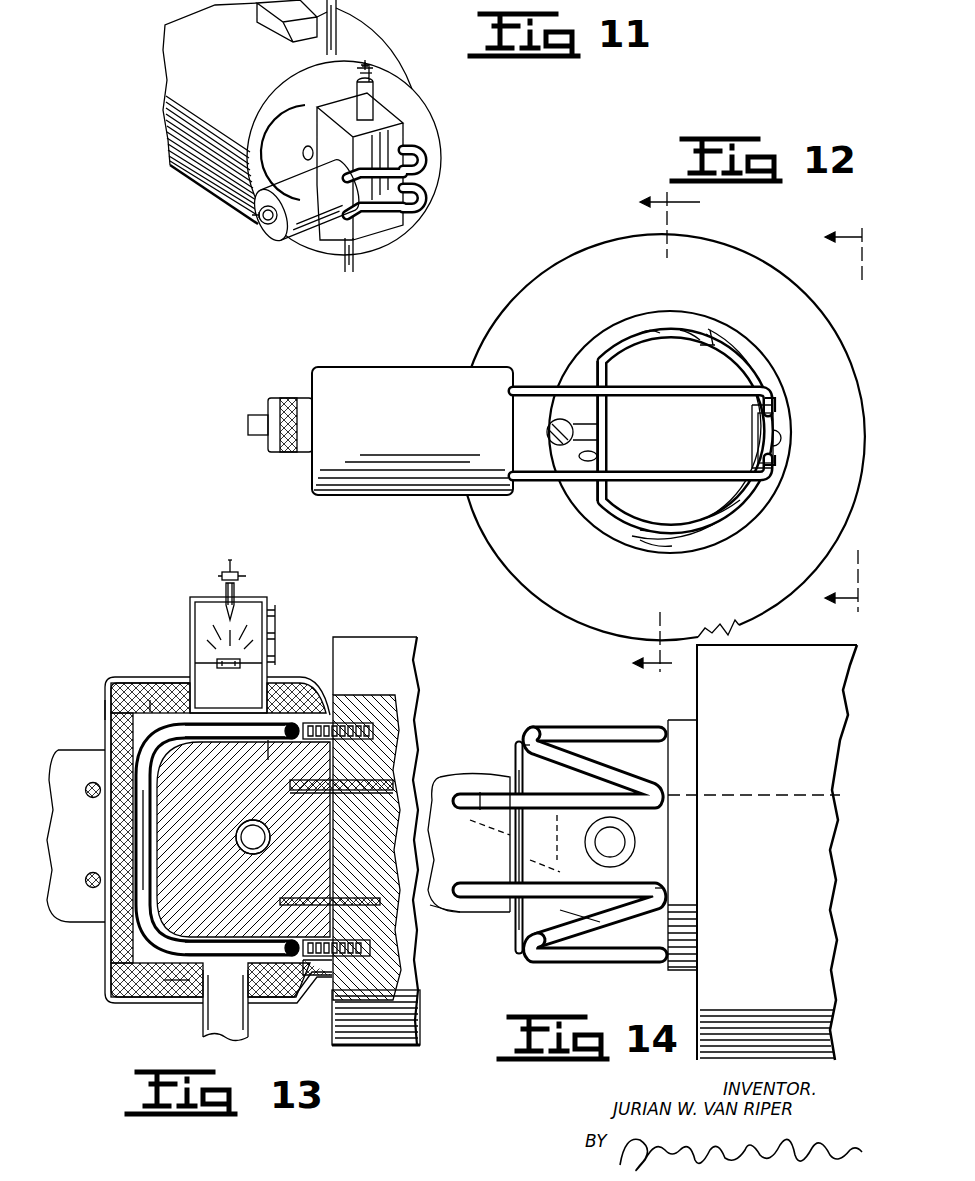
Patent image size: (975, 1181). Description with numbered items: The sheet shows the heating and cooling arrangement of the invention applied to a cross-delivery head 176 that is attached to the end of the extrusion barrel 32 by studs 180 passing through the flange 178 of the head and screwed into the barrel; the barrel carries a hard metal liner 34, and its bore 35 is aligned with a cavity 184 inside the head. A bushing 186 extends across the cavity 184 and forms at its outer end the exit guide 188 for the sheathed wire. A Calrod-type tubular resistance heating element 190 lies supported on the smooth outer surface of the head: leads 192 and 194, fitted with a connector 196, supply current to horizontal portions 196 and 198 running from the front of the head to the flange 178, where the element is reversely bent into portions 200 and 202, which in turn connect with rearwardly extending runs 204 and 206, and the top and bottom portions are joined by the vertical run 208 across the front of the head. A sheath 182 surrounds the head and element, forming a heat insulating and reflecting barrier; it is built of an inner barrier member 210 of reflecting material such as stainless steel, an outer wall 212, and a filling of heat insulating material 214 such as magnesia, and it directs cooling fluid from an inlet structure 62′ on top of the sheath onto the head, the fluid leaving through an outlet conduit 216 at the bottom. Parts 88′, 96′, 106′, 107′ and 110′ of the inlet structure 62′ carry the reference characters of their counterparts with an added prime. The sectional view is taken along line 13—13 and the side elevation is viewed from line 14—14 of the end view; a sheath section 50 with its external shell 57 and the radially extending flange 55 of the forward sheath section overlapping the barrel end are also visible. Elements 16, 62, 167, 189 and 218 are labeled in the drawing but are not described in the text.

In FIG. 11, the rod 16 is at (338, 33).
In FIG. 11, the sheath section 50 is at (192, 168).
In FIG. 12, the sheath section 50 is at (808, 318).
In FIG. 13, the sheath section 50 is at (413, 675).
In FIG. 14, the sheath section 50 is at (788, 650).
In FIG. 11, the block 62 is at (265, 30).
In FIG. 11, the inlet structure 62′ is at (391, 97).
In FIG. 13, the inlet structure 62′ is at (277, 592).
In FIG. 11, the fitting 106′ is at (367, 63).
In FIG. 13, the fitting 106′ is at (236, 570).
In FIG. 11, the fitting 107′ is at (374, 70).
In FIG. 13, the fitting 107′ is at (225, 578).
In FIG. 11, the flange 178 is at (255, 218).
In FIG. 12, the flange 178 is at (650, 322).
In FIG. 13, the flange 178 is at (312, 978).
In FIG. 14, the flange 178 is at (664, 722).
In FIG. 11, the studs 180 is at (304, 150).
In FIG. 13, the studs 180 is at (330, 742).
In FIG. 11, the sheath 182 is at (405, 140).
In FIG. 13, the sheath 182 is at (152, 666).
In FIG. 11, the lead 192 is at (422, 160).
In FIG. 12, the lead 192 is at (532, 385).
In FIG. 13, the lead 192 is at (92, 800).
In FIG. 11, the lead 194 is at (418, 205).
In FIG. 12, the lead 194 is at (515, 485).
In FIG. 13, the lead 194 is at (92, 888).
In FIG. 14, the lead 194 is at (475, 883).
In FIG. 11, the connector 196 is at (312, 232).
In FIG. 12, the connector 196 is at (360, 370).
In FIG. 13, the connector 196 is at (82, 760).
In FIG. 14, the connector 196 is at (440, 790).
In FIG. 11, the outlet conduit 216 is at (355, 264).
In FIG. 13, the outlet conduit 216 is at (240, 1040).
In FIG. 12, the section line 13— 13 is at (647, 433).
In FIG. 12, the section line 14— 14 is at (829, 425).
In FIG. 12, the screw 167 is at (566, 447).
In FIG. 12, the cross-delivery head 176 is at (784, 409).
In FIG. 13, the cross-delivery head 176 is at (116, 962).
In FIG. 14, the cross-delivery head 176 is at (512, 925).
In FIG. 12, the exit guide 188 is at (782, 440).
In FIG. 14, the exit guide 188 is at (632, 850).
In FIG. 12, the heating element 190 is at (716, 345).
In FIG. 13, the heating element 190 is at (266, 752).
In FIG. 14, the heating element 190 is at (551, 714).
In FIG. 12, the horizontal portion 198 is at (774, 480).
In FIG. 14, the horizontal portion 198 is at (655, 886).
In FIG. 12, the reversely bent portion 200 is at (752, 368).
In FIG. 14, the reversely bent portion 200 is at (675, 770).
In FIG. 12, the reversely bent portion 202 is at (747, 527).
In FIG. 14, the reversely bent portion 202 is at (600, 920).
In FIG. 12, the rearwardly extending run 204 is at (690, 328).
In FIG. 13, the rearwardly extending run 204 is at (238, 740).
In FIG. 14, the rearwardly extending run 204 is at (592, 735).
In FIG. 12, the rearwardly extending run 206 is at (660, 560).
In FIG. 13, the rearwardly extending run 206 is at (250, 945).
In FIG. 14, the rearwardly extending run 206 is at (612, 963).
In FIG. 12, the vertical run 208 is at (606, 418).
In FIG. 13, the vertical run 208 is at (118, 920).
In FIG. 14, the vertical run 208 is at (517, 955).
In FIG. 13, the barrel 32 is at (380, 790).
In FIG. 13, the metal liner 34 is at (318, 897).
In FIG. 13, the bore 35 is at (368, 798).
In FIG. 13, the radially extending flange 55 is at (318, 692).
In FIG. 13, the external shell 57 is at (380, 640).
In FIG. 13, the lug 88′ is at (278, 630).
In FIG. 13, the nozzle 96′ is at (236, 655).
In FIG. 13, the fitting 110′ is at (232, 670).
In FIG. 13, the cavity 184 is at (215, 900).
In FIG. 14, the cavity 184 is at (460, 912).
In FIG. 13, the bushing 186 is at (236, 842).
In FIG. 14, the collar 189 is at (482, 792).
In FIG. 13, the inner barrier member 210 is at (105, 680).
In FIG. 13, the outer wall 212 is at (140, 1003).
In FIG. 13, the heat insulating material 214 is at (185, 1003).
In FIG. 13, the wall 218 is at (170, 700).